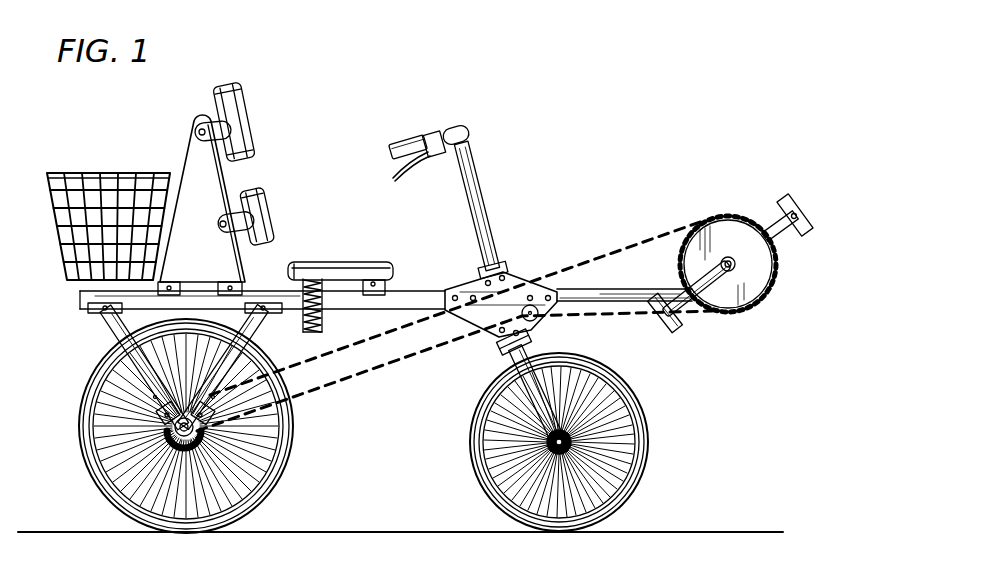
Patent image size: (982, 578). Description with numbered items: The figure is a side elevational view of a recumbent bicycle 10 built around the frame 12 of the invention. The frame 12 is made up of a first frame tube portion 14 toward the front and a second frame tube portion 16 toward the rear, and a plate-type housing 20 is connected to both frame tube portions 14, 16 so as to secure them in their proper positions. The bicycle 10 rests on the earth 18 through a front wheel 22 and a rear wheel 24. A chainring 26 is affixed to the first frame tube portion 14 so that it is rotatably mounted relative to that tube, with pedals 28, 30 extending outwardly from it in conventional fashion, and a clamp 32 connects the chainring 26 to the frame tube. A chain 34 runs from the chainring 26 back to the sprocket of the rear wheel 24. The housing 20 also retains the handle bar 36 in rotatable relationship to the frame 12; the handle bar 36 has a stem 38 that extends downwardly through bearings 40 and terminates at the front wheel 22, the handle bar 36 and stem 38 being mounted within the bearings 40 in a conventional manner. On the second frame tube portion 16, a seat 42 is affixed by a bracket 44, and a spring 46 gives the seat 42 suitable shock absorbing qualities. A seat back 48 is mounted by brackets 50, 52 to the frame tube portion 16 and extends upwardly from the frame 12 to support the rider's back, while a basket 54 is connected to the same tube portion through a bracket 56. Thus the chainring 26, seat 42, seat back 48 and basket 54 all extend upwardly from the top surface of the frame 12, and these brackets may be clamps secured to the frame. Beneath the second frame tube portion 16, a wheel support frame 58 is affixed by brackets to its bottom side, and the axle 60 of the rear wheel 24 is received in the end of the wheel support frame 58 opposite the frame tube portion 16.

The recumbent bicycle 10 is at (657, 163).
The frame 12 is at (607, 290).
The first frame tube portion 14 is at (593, 302).
The second frame tube portion 16 is at (408, 298).
The earth 18 is at (725, 530).
The plate-type housing 20 is at (533, 277).
The wheel 22 is at (653, 445).
The rear wheel 24 is at (288, 462).
The chainring 26 is at (735, 225).
The pedal 28 is at (805, 218).
The pedal 30 is at (677, 323).
The clamp 32 is at (752, 282).
The chain 34 is at (673, 230).
The handle bar 36 is at (447, 132).
The stem 38 is at (483, 200).
The bearings 40 is at (507, 267).
The seat 42 is at (358, 263).
The bracket 44 is at (385, 285).
The spring 46 is at (320, 317).
The seat back 48 is at (252, 122).
The bracket 50 is at (247, 288).
The bracket 52 is at (175, 281).
The basket 54 is at (112, 170).
The bracket 56 is at (80, 297).
The wheel support frame 58 is at (107, 335).
The axle 60 is at (102, 472).